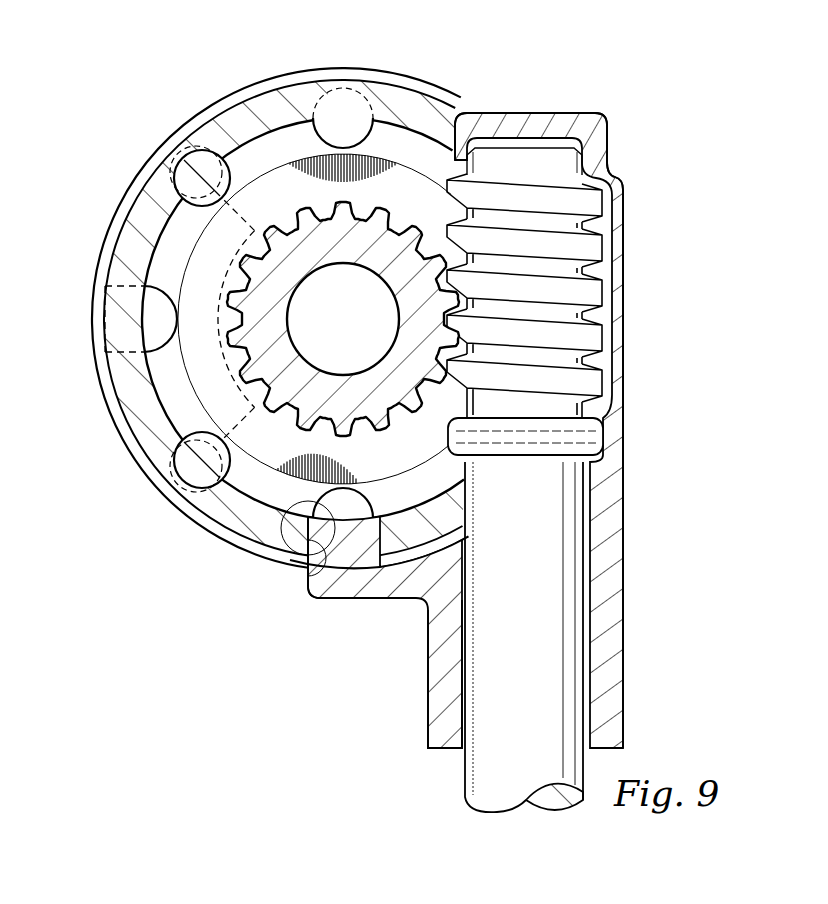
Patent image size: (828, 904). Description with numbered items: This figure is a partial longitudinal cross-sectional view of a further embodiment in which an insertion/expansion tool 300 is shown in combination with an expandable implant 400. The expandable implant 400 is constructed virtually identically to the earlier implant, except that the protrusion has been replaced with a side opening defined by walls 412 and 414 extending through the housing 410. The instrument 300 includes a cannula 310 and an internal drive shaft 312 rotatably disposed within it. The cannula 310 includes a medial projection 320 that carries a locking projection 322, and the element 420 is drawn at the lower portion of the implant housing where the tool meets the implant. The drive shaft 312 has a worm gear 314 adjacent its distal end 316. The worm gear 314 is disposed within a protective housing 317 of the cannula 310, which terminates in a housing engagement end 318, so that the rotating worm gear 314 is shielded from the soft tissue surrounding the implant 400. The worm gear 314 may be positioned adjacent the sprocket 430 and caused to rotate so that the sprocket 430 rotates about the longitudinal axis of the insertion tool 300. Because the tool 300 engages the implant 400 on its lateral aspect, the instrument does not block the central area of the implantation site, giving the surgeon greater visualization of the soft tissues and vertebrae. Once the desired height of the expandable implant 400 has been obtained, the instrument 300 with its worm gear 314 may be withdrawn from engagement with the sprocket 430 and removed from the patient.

The insertion/expansion tool 300 is at (626, 526).
The cannula 310 is at (428, 703).
The internal drive shaft 312 is at (508, 632).
The worm gear 314 is at (605, 222).
The distal end 316 is at (608, 140).
The protective housing 317 is at (624, 300).
The housing engagement end 318 is at (575, 112).
The medial projection 320 is at (387, 603).
The locking projection 322 is at (290, 553).
The expandable implant 400 is at (108, 504).
The housing 410 is at (378, 69).
The wall 412 is at (467, 512).
The wall 414 is at (497, 112).
The bracket 420 is at (310, 574).
The sprocket 430 is at (415, 428).